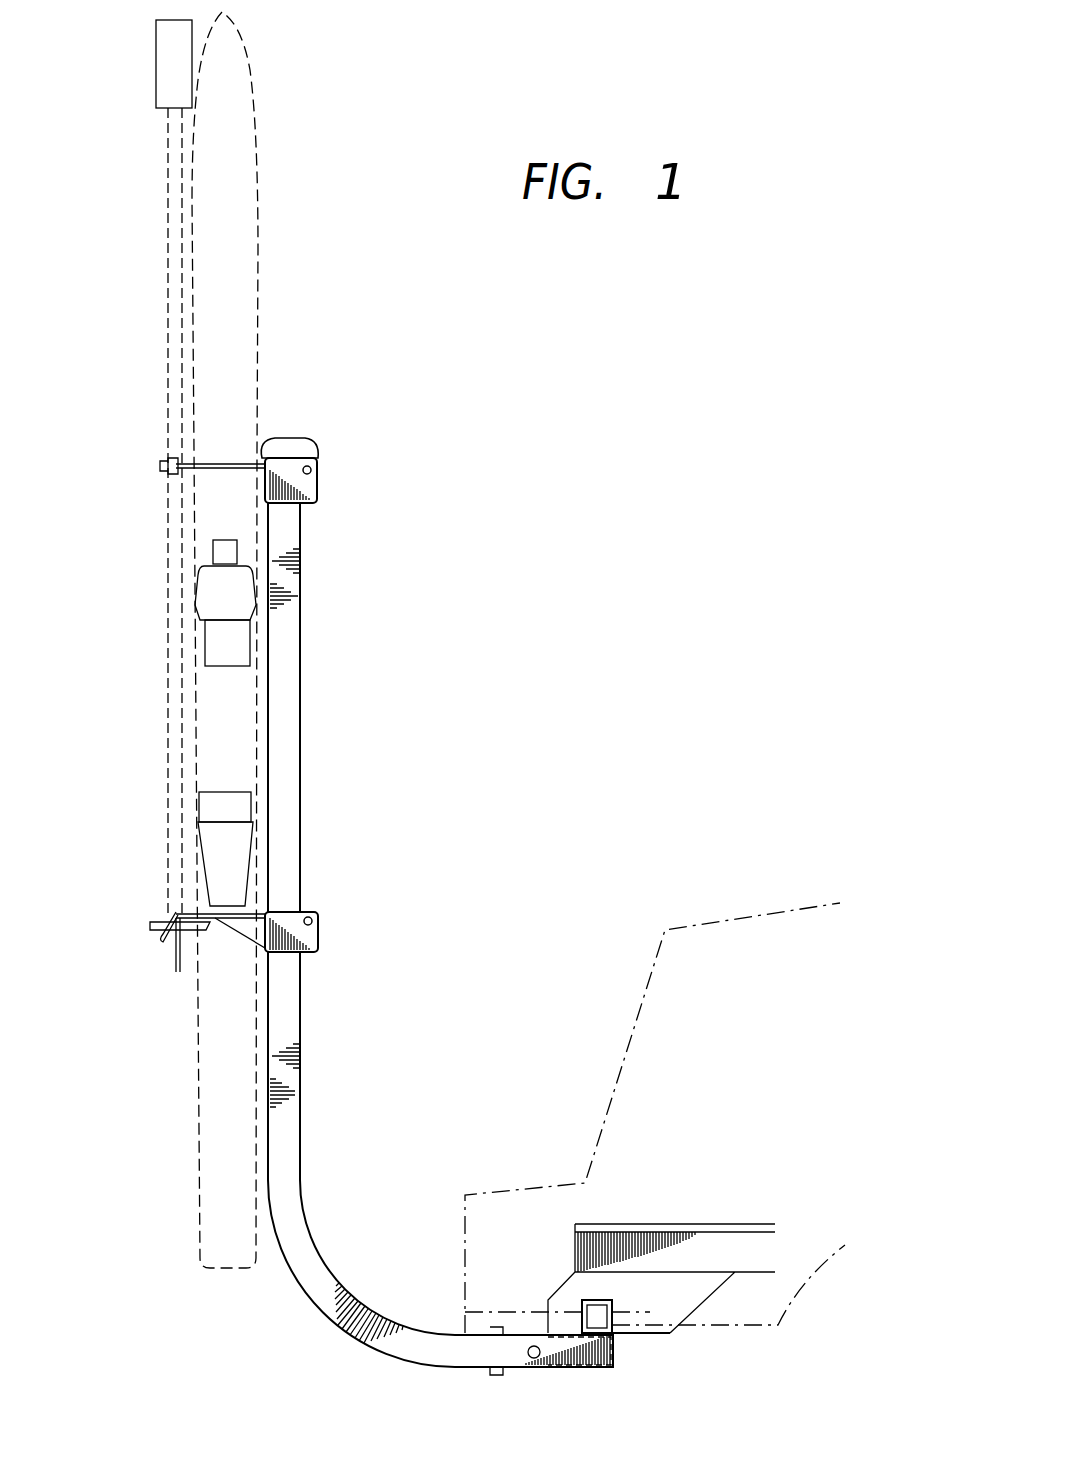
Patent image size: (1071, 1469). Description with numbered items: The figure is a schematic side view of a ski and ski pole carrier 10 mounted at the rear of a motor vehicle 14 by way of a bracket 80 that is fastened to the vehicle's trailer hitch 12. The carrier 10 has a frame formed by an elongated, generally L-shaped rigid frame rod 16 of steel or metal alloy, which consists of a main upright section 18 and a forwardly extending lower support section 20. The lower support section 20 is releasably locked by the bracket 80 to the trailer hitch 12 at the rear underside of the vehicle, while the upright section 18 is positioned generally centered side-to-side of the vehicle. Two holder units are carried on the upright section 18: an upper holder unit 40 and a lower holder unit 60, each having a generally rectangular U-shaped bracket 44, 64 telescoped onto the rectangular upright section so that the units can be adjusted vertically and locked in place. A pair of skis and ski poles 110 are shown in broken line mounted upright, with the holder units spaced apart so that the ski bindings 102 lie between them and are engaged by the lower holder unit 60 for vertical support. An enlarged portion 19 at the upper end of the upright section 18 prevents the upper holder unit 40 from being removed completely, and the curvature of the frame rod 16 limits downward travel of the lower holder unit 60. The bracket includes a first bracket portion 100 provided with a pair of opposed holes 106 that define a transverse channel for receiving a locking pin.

The carrier 10 is at (334, 577).
The trailer hitch 12 is at (658, 1337).
The motor vehicle 14 is at (645, 995).
The frame rod 16 is at (302, 1060).
The upright section 18 is at (302, 762).
The enlarged portion 19 is at (318, 445).
The lower support section 20 is at (470, 1333).
The upper holder unit 40 is at (222, 462).
The U-shaped bracket 44 is at (318, 485).
The lower holder unit 60 is at (188, 903).
The U-shaped bracket 64 is at (318, 925).
The bracket 80 is at (603, 1372).
The first bracket portion 100 is at (240, 196).
The bindings 102 is at (202, 653).
The holes 106 is at (534, 1343).
The ski poles 110 is at (163, 188).